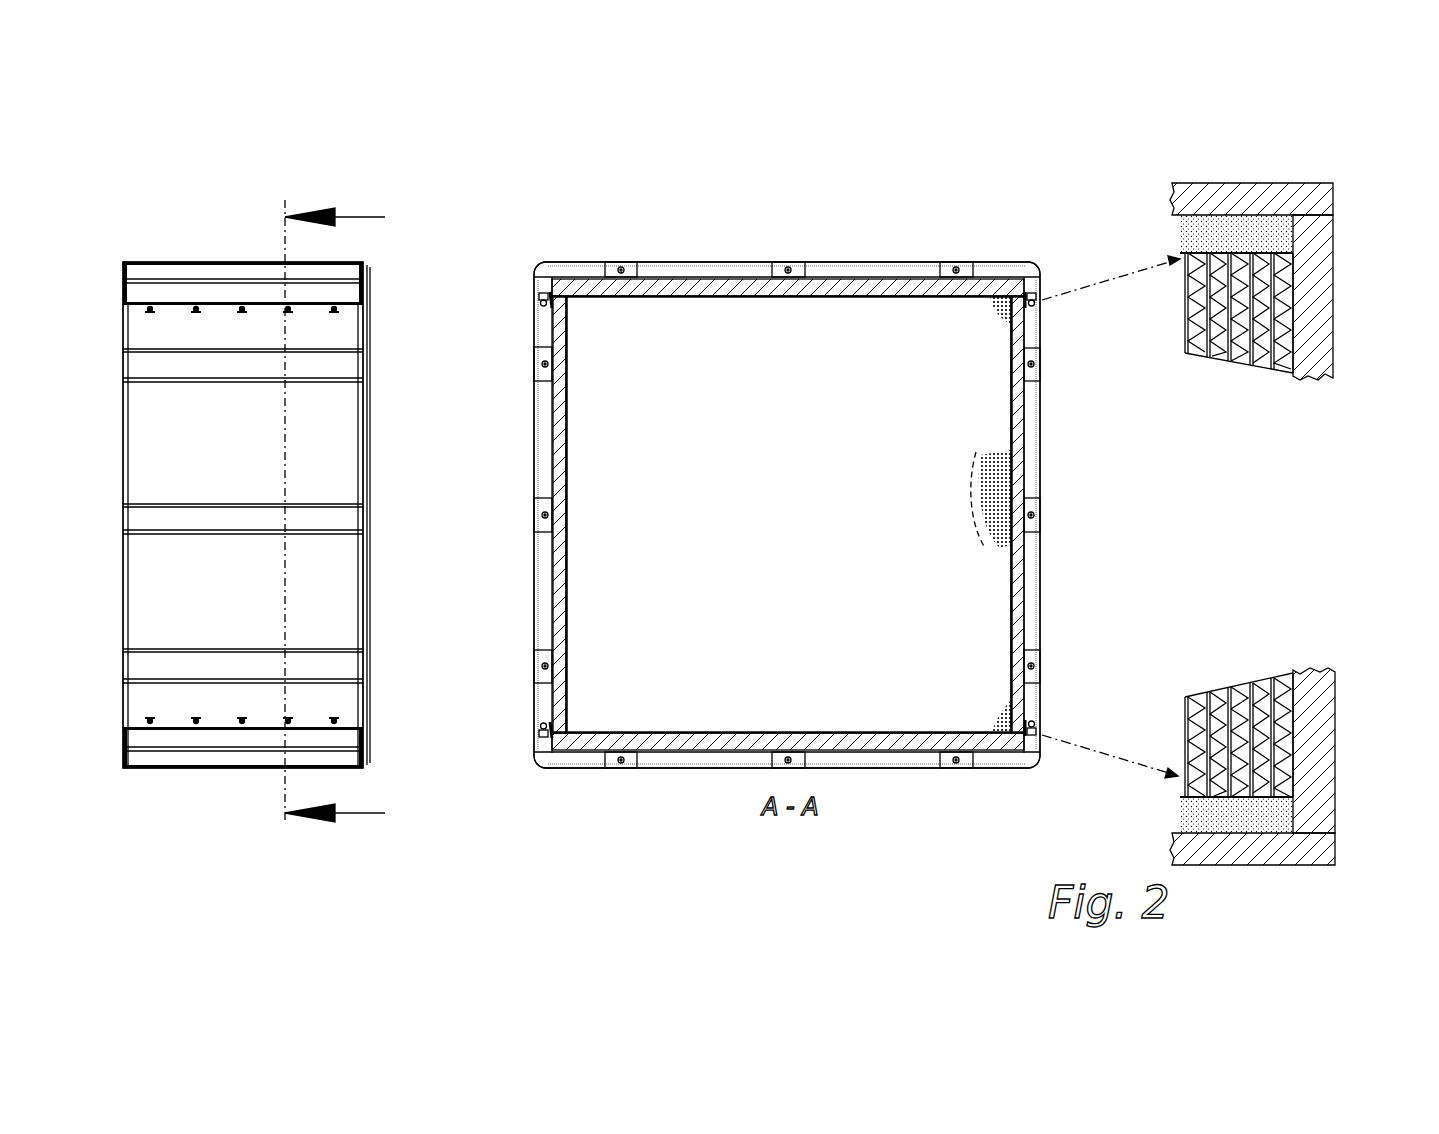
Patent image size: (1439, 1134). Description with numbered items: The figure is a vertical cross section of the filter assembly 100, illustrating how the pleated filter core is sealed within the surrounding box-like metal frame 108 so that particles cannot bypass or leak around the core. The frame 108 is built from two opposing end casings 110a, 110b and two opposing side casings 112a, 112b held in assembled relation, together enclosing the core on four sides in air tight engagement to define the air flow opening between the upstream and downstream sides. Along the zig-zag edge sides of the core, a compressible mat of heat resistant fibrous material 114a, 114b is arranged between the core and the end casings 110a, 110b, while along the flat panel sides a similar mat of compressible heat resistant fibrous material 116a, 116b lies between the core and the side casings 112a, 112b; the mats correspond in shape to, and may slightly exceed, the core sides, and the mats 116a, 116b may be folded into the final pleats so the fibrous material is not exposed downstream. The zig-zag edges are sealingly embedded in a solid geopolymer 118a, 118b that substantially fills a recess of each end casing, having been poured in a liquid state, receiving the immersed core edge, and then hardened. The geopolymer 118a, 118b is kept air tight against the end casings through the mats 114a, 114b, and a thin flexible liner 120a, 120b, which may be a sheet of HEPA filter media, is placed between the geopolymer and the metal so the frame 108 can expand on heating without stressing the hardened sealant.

The filter assembly 100 is at (160, 207).
The box-like metal frame 108 is at (210, 770).
The end casing 110a is at (872, 770).
The end casing 110b is at (862, 266).
The side casing 112a is at (533, 433).
The side casing 112b is at (1045, 433).
The compressible mat of heat resistant fibrous material 114a is at (665, 745).
The compressible mat of heat resistant fibrous material 114b is at (735, 285).
The mat of compressible heat resistant fibrous material 116a is at (556, 570).
The mat of compressible heat resistant fibrous material 116b is at (1018, 550).
The geopolymer 118a is at (990, 742).
The geopolymer 118b is at (995, 292).
The flexible liner 120a is at (1022, 762).
The flexible liner 120b is at (545, 280).